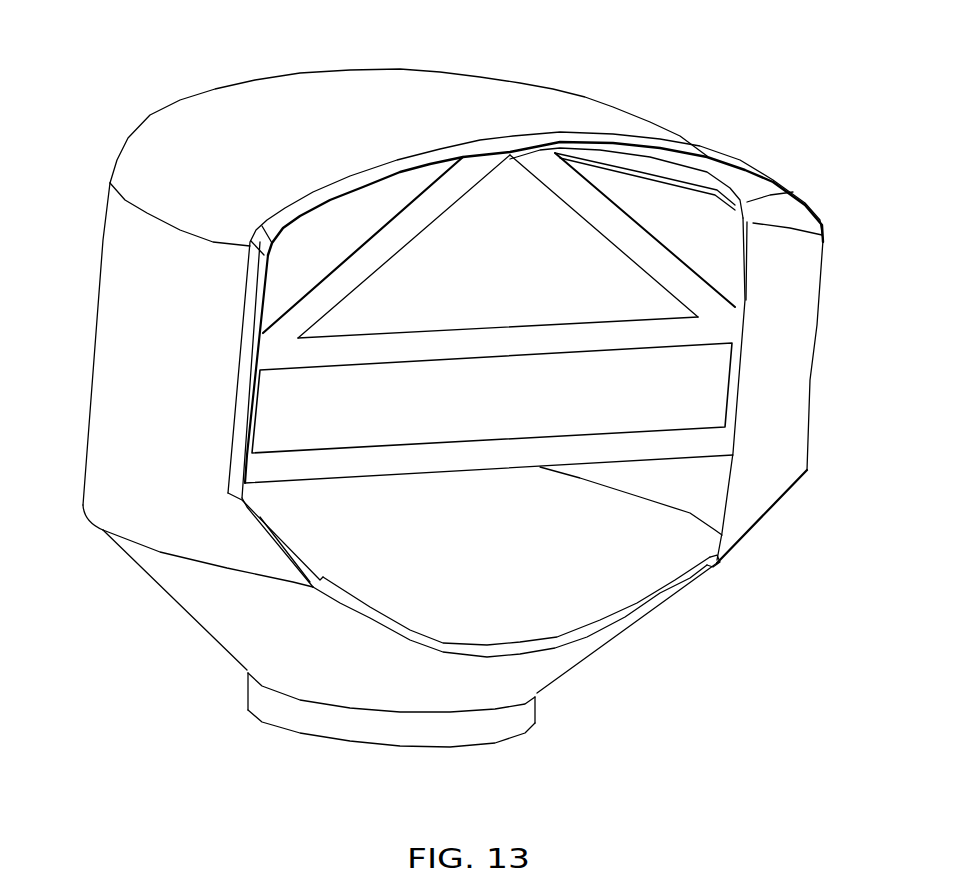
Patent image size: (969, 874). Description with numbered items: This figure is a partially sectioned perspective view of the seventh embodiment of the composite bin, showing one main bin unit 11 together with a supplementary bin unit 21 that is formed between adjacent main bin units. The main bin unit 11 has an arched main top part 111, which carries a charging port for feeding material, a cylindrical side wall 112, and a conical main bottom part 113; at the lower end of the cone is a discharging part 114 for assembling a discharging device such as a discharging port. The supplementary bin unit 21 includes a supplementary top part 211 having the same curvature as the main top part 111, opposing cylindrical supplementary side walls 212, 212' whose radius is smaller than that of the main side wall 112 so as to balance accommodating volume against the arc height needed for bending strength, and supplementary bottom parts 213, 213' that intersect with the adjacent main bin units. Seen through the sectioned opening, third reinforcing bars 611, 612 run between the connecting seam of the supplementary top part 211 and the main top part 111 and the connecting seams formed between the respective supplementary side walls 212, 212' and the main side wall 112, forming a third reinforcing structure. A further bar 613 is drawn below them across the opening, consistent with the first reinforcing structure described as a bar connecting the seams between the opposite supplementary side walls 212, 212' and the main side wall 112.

The main bin unit 11 is at (468, 383).
The main top part 111 is at (400, 88).
The main side wall 112 is at (115, 298).
The main bottom part 113 is at (205, 600).
The discharging part 114 is at (288, 713).
The supplementary bin unit 21 is at (532, 390).
The supplementary top part 211 is at (370, 173).
The supplementary side wall 212 is at (220, 370).
The supplementary side wall 212' is at (805, 389).
The supplementary bottom part 213 is at (272, 540).
The supplementary bottom part 213' is at (694, 515).
The third reinforcing bar 611 is at (378, 247).
The third reinforcing bar 612 is at (627, 235).
The horizontal bar 613 is at (512, 342).